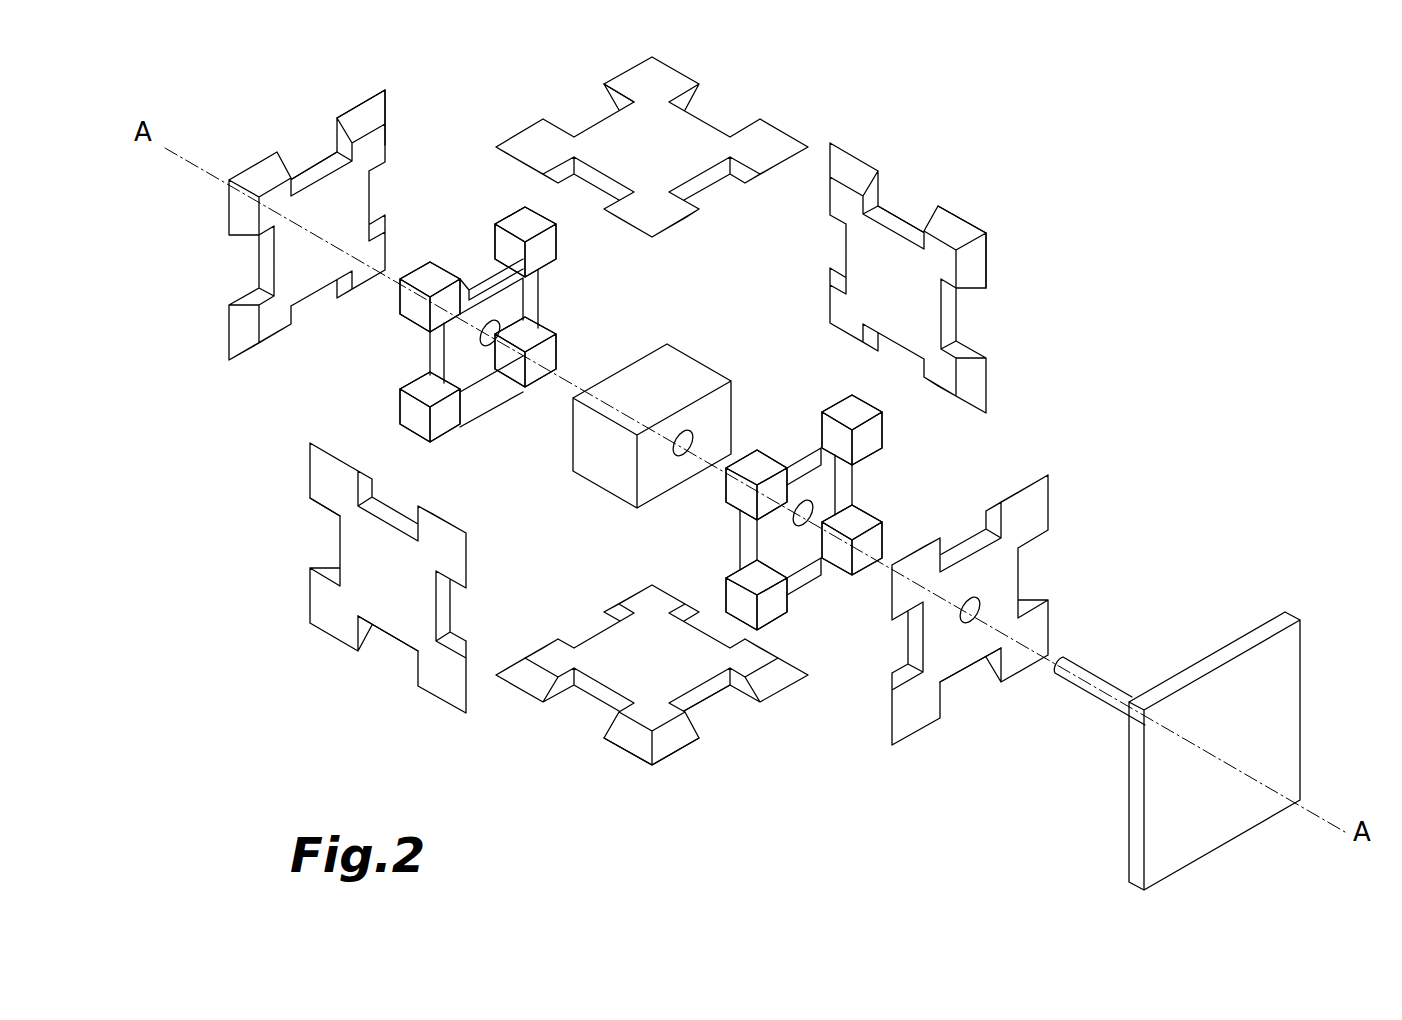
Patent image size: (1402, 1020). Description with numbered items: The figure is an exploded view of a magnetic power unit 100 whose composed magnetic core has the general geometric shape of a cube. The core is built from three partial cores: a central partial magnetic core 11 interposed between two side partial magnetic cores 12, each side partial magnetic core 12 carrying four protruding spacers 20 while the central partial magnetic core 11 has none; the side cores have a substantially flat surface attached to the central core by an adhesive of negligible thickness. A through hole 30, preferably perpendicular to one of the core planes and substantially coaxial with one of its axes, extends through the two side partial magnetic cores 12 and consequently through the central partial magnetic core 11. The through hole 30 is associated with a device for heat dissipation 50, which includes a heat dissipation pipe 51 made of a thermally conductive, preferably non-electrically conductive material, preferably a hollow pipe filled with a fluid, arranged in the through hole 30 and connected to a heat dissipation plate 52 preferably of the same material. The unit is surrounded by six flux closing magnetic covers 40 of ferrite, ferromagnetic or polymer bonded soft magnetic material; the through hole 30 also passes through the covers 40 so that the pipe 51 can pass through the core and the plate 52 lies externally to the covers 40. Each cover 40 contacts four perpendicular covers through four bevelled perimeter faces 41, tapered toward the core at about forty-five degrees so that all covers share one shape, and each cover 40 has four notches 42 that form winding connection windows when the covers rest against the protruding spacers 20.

The magnetic power unit 100 is at (1152, 190).
The central partial magnetic core 11 is at (585, 444).
The side partial magnetic core 12 is at (470, 276).
The protruding spacer 20 is at (527, 226).
The through hole 30 is at (503, 330).
The flux closing magnetic cover 40 is at (287, 250).
The perimeter face 41 is at (380, 108).
The notch 42 is at (313, 153).
The device for heat dissipation 50 is at (1226, 711).
The heat dissipation pipe 51 is at (1105, 682).
The heat dissipation plate 52 is at (1285, 732).